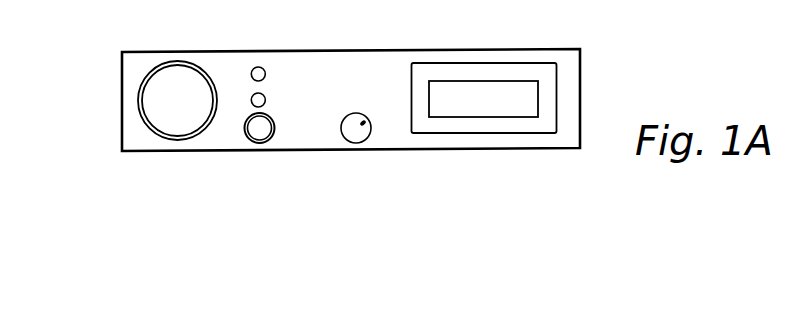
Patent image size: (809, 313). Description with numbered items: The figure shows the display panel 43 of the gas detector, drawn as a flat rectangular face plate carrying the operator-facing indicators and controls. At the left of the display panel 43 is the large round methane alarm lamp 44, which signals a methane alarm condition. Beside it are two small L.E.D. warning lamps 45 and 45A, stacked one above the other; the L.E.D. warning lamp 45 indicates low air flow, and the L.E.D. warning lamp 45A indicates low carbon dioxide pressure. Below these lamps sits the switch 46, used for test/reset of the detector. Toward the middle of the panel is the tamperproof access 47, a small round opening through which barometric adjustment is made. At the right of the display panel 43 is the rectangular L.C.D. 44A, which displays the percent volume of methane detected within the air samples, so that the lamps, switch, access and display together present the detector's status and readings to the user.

The display panel 43 is at (402, 50).
The methane alarm lamp 44 is at (153, 96).
The L.C.D. 44A is at (523, 98).
The L.E.D. warning lamp 45 is at (257, 67).
The L.E.D. warning lamp 45A is at (253, 98).
The switch 46 is at (260, 132).
The tamperproof access 47 is at (355, 133).